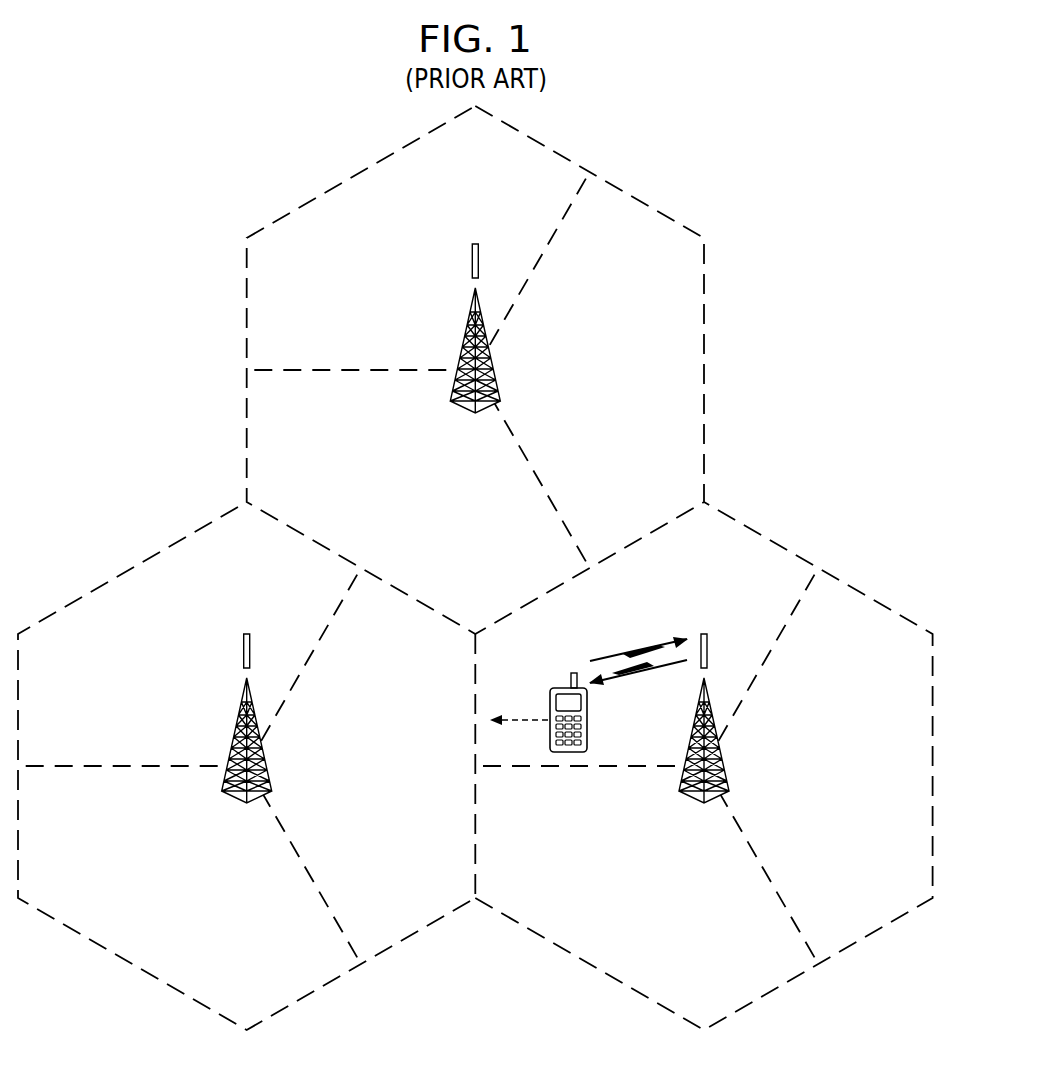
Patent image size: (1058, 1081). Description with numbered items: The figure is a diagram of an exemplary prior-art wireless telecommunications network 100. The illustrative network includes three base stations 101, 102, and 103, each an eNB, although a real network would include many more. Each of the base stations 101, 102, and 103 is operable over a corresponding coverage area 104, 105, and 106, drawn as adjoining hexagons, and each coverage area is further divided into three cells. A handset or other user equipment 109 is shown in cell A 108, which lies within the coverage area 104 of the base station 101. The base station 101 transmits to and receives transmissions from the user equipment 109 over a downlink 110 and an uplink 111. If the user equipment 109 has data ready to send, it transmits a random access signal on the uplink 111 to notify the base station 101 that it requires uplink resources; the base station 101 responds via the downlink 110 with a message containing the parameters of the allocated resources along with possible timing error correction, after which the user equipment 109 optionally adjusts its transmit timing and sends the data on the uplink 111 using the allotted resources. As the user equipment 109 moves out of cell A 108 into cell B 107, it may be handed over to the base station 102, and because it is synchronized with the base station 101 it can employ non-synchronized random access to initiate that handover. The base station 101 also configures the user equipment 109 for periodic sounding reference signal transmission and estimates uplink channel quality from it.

The wireless telecommunications network 100 is at (256, 121).
The base station 101 is at (728, 772).
The base station 102 is at (235, 738).
The base station 103 is at (463, 350).
The coverage area 104 is at (782, 985).
The coverage area 105 is at (143, 970).
The coverage area 106 is at (628, 191).
The cell B 107 is at (407, 802).
The cell A 108 is at (660, 900).
The user equipment 109 is at (562, 689).
The downlink 110 is at (635, 677).
The uplink 111 is at (627, 650).